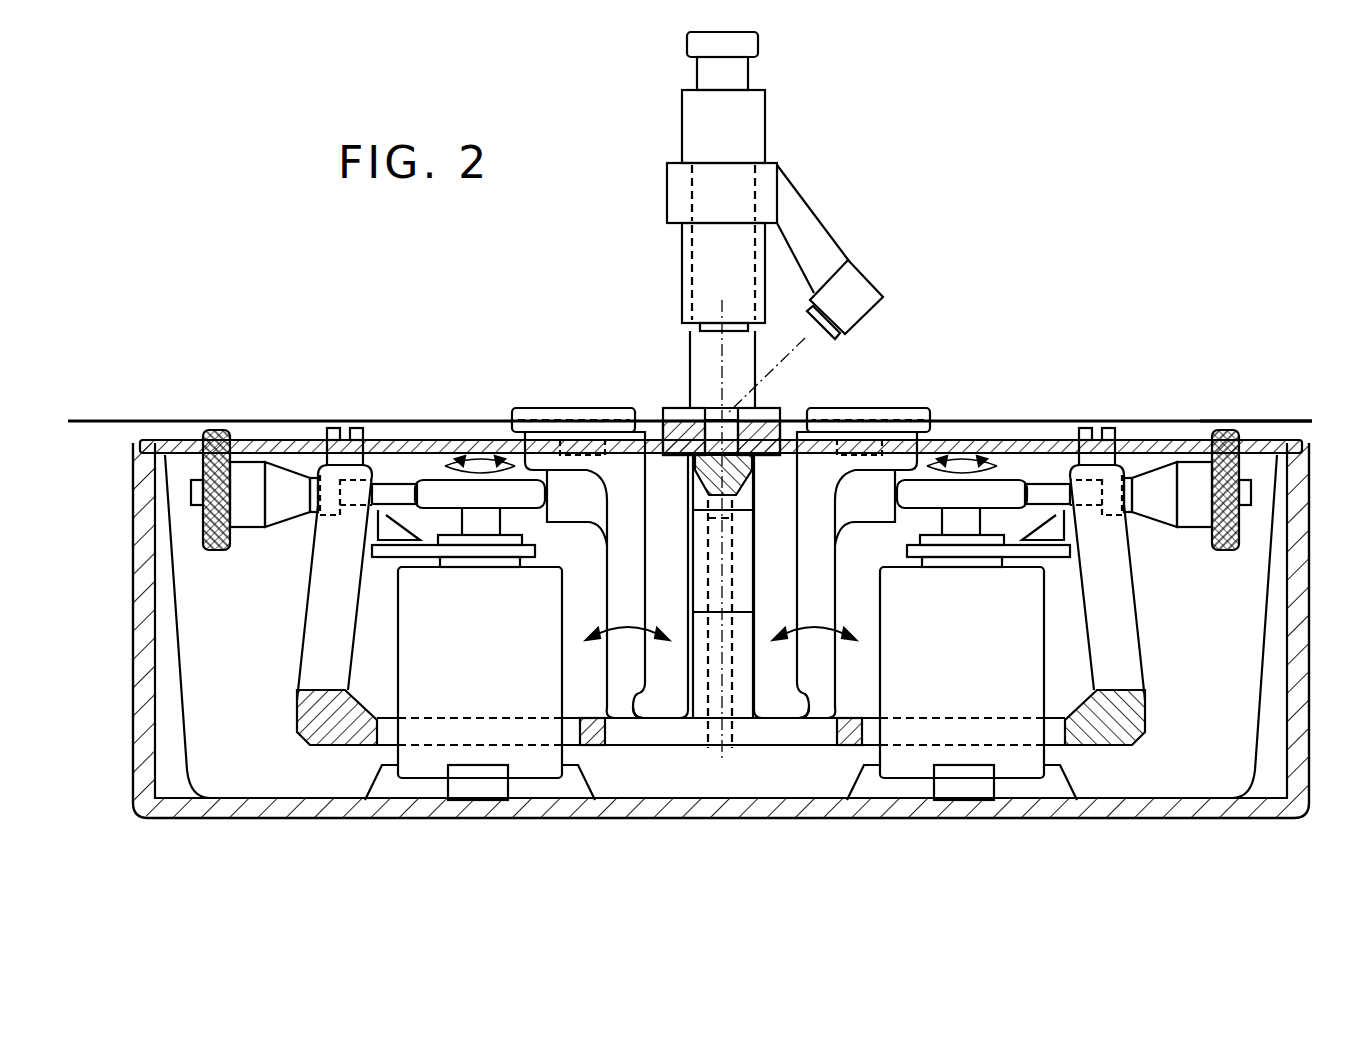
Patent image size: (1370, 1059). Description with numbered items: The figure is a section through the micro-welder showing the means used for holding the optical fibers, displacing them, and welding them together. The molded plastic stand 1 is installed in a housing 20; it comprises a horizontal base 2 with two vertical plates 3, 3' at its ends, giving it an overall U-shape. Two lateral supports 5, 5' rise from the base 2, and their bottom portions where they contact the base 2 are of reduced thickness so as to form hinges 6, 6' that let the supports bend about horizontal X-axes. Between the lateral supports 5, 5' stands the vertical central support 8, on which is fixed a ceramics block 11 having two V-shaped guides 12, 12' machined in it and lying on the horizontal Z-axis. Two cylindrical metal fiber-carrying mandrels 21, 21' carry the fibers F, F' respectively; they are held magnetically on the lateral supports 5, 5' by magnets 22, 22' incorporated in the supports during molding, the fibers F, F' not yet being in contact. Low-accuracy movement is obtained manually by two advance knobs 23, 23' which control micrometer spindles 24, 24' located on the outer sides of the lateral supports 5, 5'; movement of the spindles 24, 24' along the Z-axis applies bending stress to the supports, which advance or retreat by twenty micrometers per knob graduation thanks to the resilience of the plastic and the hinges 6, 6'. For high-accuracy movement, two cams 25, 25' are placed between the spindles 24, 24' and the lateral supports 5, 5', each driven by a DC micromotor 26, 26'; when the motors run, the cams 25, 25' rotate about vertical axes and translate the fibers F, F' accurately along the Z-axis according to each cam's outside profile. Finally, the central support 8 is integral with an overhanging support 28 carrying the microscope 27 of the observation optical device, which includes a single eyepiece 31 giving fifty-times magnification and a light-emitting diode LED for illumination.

The stand 1 is at (293, 655).
The horizontal base 2 is at (655, 738).
The vertical plate 3 is at (317, 586).
The vertical plate 3' is at (1128, 586).
The lateral support 5 is at (606, 575).
The lateral support 5' is at (835, 575).
The hinge 6 is at (628, 683).
The hinge 6' is at (817, 683).
The vertical central support 8 is at (748, 573).
The ceramics block 11 is at (678, 400).
The V-shaped guide 12 is at (663, 411).
The V-shaped guide 12' is at (787, 411).
The housing 20 is at (145, 630).
The fiber-carrying mandrel 21 is at (573, 400).
The fiber-carrying mandrel 21' is at (868, 400).
The magnet 22 is at (604, 470).
The magnet 22' is at (843, 470).
The manual advance knob 23 is at (224, 459).
The manual advance knob 23' is at (1245, 459).
The micrometer spindle 24 is at (274, 447).
The micrometer spindle 24' is at (1168, 447).
The cam 25 is at (458, 467).
The cam 25' is at (983, 467).
The DC micromotor 26 is at (476, 683).
The DC micromotor 26' is at (971, 683).
The microscope 27 is at (655, 265).
The overhanging support 28 is at (705, 336).
The eyepiece 31 is at (752, 122).
The fiber F is at (690, 394).
The fiber F' is at (1269, 394).
The light-emitting diode LED is at (808, 328).